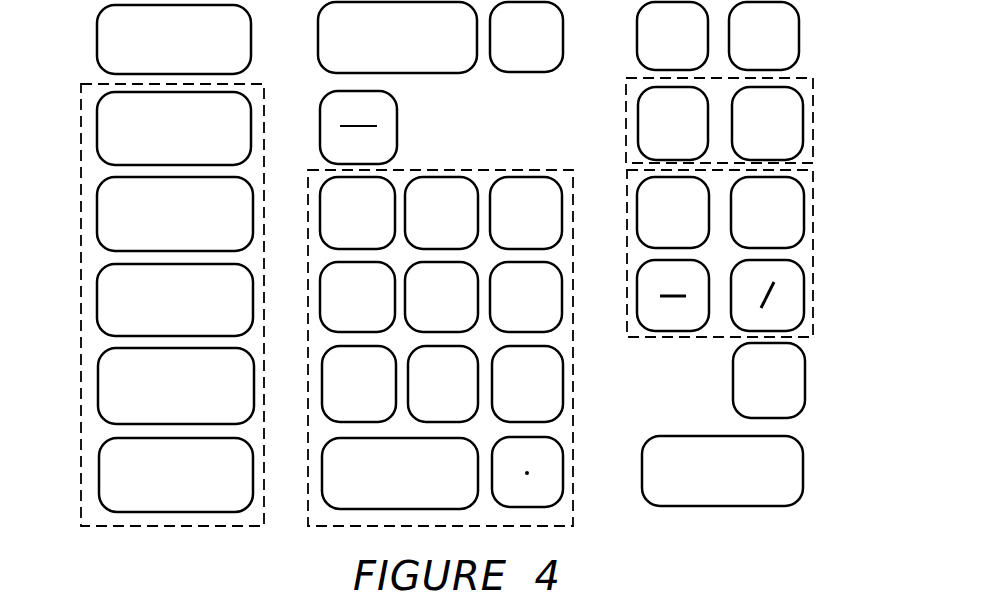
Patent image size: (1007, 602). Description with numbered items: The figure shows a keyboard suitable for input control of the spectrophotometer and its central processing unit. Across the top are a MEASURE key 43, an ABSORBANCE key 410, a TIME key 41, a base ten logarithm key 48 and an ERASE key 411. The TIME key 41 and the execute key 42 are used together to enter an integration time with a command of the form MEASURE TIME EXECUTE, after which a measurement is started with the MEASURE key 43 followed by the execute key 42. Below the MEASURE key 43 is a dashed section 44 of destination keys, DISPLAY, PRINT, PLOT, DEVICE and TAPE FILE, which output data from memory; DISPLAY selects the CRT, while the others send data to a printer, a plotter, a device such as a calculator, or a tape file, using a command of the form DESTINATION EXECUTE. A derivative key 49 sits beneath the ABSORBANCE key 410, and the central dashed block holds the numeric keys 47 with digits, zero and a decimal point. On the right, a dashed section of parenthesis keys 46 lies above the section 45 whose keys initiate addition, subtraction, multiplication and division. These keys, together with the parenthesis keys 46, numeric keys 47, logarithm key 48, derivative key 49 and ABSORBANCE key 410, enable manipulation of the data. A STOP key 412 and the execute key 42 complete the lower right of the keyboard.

The MEASURE key 43 is at (97, 50).
The destination keys section 44 is at (81, 478).
The ABSORBANCE key 410 is at (318, 46).
The TIME key 41 is at (563, 25).
The derivative key 49 is at (320, 130).
The numeric keys 47 is at (573, 508).
The base 10 logarithm key 48 is at (637, 46).
The ERASE key 411 is at (799, 60).
The parenthesis keys 46 is at (813, 145).
The arithmetic operation keys section 45 is at (813, 330).
The STOP key 412 is at (805, 405).
The execute key 42 is at (803, 490).